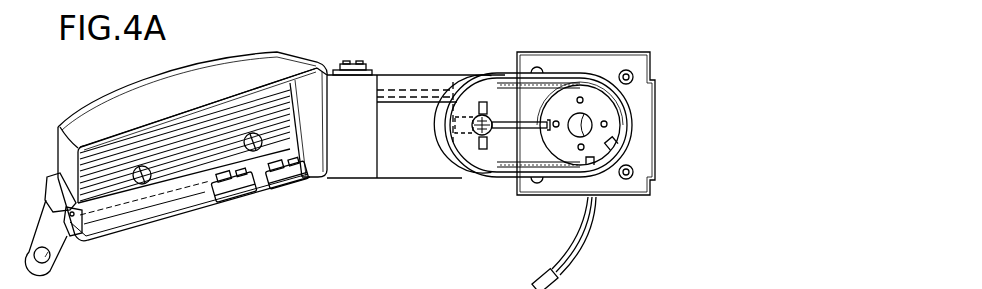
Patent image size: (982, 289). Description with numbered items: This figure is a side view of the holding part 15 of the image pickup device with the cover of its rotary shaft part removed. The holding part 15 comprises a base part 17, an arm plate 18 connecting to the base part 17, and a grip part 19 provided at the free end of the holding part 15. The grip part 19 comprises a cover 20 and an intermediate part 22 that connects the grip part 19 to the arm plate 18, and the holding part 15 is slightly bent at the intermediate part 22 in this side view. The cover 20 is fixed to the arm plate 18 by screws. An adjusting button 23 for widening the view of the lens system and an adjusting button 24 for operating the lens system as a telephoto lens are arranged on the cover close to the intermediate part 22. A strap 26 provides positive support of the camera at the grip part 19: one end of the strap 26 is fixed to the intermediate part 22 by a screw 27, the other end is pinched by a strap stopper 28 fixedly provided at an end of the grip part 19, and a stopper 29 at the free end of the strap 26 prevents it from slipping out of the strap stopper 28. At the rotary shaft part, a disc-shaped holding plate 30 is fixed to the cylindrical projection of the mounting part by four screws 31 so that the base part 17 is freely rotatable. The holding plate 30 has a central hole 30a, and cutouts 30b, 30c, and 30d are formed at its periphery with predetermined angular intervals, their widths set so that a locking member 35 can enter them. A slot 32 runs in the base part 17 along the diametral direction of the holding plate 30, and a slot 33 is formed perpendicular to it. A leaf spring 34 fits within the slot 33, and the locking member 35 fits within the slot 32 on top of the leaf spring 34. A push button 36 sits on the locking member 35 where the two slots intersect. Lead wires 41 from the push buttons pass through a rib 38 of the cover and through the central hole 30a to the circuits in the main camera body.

The holding part 15 is at (276, 46).
The base part 17 is at (479, 160).
The arm plate 18 is at (404, 173).
The grip part 19 is at (145, 229).
The cover 20 is at (96, 148).
The intermediate part 22 is at (362, 172).
The adjusting button 23 is at (284, 195).
The adjusting button 24 is at (243, 201).
The strap 26 is at (189, 68).
The screw 27 is at (356, 65).
The strap stopper 28 is at (46, 180).
The stopper 29 is at (49, 258).
The holding plate 30 is at (593, 93).
The central hole 30a is at (591, 119).
The cutout 30b is at (513, 128).
The cutout 30c is at (595, 168).
The cutout 30d is at (617, 143).
The screw 31 is at (579, 151).
The slot 32 is at (525, 120).
The slot 33 is at (478, 143).
The leaf spring 34 is at (485, 101).
The locking member 35 is at (505, 131).
The push button 36 is at (471, 133).
The rib 38 is at (412, 82).
The lead wires 41 is at (579, 256).